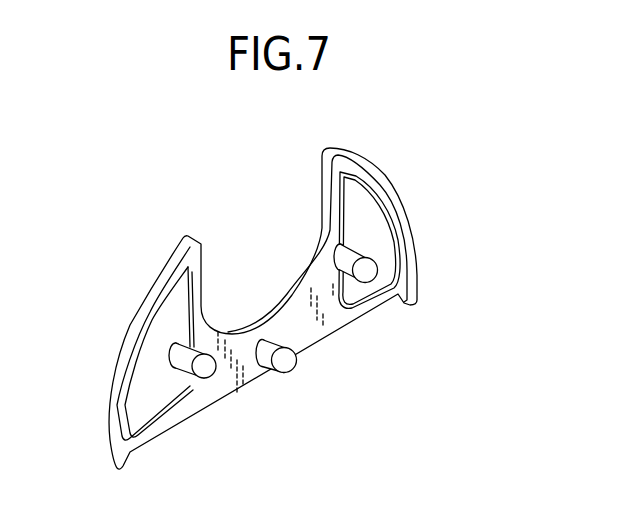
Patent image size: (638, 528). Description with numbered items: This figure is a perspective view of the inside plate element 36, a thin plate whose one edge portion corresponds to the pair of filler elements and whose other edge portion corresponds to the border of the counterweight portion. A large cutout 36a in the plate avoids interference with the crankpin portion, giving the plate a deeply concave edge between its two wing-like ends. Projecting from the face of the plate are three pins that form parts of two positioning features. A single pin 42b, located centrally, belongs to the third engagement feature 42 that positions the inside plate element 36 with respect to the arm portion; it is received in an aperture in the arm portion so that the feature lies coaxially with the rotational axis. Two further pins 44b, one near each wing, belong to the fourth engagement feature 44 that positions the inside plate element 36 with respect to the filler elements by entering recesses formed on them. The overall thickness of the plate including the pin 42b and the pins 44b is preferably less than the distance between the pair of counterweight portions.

The inside plate element 36 is at (408, 181).
The cutout 36a is at (330, 194).
The third engagement feature 42 is at (329, 389).
The pin 42b is at (291, 371).
The fourth engagement feature 44 is at (330, 362).
The pins 44b is at (210, 377).